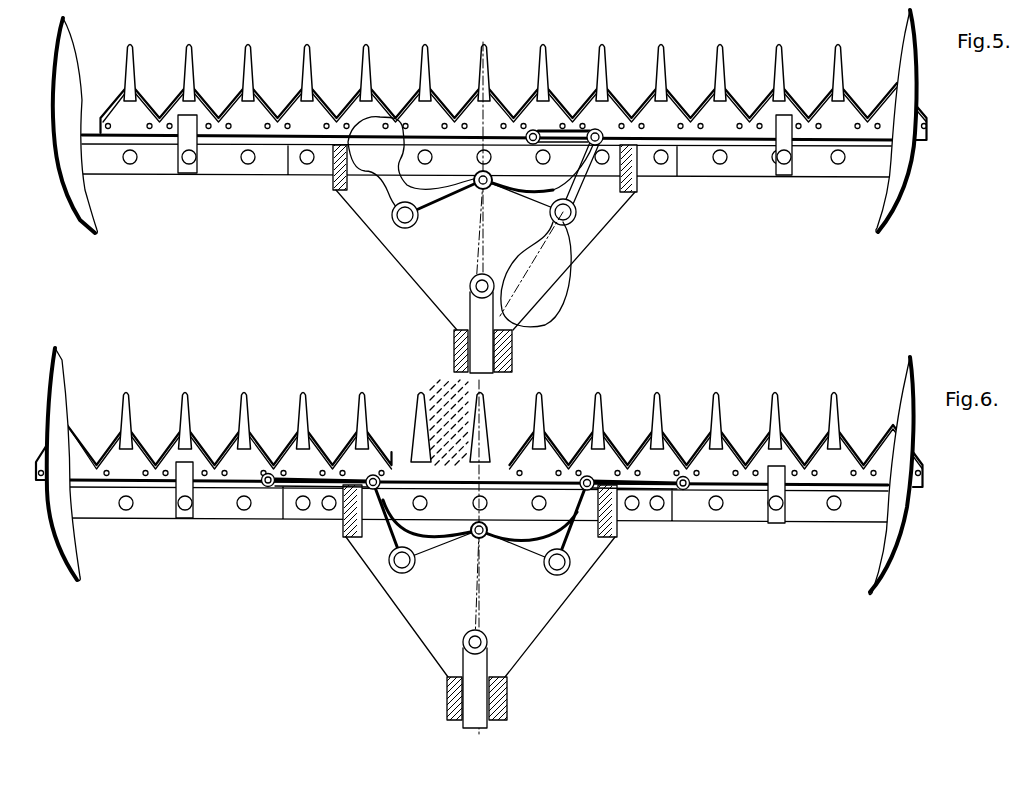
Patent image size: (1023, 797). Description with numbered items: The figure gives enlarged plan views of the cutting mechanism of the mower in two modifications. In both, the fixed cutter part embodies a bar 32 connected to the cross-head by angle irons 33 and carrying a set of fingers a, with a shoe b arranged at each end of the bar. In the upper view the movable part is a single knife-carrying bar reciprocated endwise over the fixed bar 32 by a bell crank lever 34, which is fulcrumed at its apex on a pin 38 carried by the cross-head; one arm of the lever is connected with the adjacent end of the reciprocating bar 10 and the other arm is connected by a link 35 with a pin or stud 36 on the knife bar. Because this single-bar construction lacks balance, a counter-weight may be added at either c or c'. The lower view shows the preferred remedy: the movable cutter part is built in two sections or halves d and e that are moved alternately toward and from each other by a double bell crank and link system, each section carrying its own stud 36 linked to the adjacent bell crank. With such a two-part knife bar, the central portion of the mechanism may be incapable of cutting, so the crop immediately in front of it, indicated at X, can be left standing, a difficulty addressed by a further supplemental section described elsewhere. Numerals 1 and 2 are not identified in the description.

In FIG. 5, the knife section 1 is at (113, 112).
In FIG. 5, the knife clip 2 is at (177, 111).
In FIG. 5, the reciprocating bar 10 is at (477, 310).
In FIG. 5, the bar 32 is at (220, 168).
In FIG. 6, the bar 32 is at (222, 512).
In FIG. 5, the angle irons 33 is at (310, 163).
In FIG. 6, the angle irons 33 is at (312, 512).
In FIG. 5, the bell crank lever 34 is at (582, 178).
In FIG. 5, the link 35 is at (551, 127).
In FIG. 5, the pin or stud 36 is at (534, 144).
In FIG. 5, the pin 38 is at (577, 213).
In FIG. 5, the fingers a is at (664, 68).
In FIG. 5, the shoe b is at (62, 115).
In FIG. 5, the counter-weight position c is at (395, 177).
In FIG. 5, the counter-weight position c' is at (558, 269).
In FIG. 6, the section of movable cutter part d is at (256, 456).
In FIG. 6, the section of movable cutter part e is at (667, 453).
In FIG. 6, the portion of the crop X is at (450, 422).